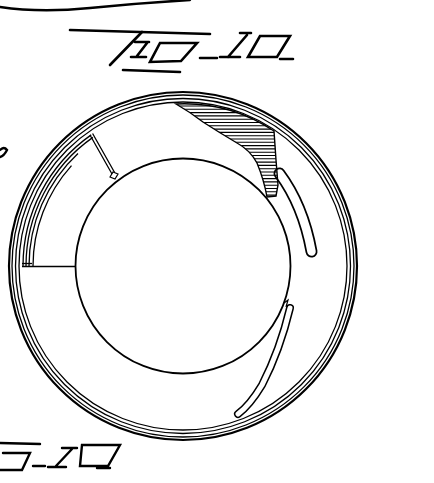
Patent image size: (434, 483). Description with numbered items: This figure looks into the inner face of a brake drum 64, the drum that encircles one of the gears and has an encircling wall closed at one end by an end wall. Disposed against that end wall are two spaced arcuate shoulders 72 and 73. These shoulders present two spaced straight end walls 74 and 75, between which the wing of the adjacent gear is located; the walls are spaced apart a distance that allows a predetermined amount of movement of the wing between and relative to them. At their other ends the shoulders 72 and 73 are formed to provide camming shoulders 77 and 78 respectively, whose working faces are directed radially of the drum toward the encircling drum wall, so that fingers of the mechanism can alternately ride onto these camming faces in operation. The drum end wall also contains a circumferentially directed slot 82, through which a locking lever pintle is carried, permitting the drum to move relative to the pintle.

The brake drum 64 is at (72, 134).
The arcuate shoulder 72 is at (210, 410).
The arcuate shoulder 73 is at (187, 133).
The straight end wall 74 is at (52, 266).
The straight end wall 75 is at (112, 176).
The camming shoulder 77 is at (270, 388).
The camming shoulder 78 is at (253, 157).
The circumferentially directed slot 82 is at (297, 190).